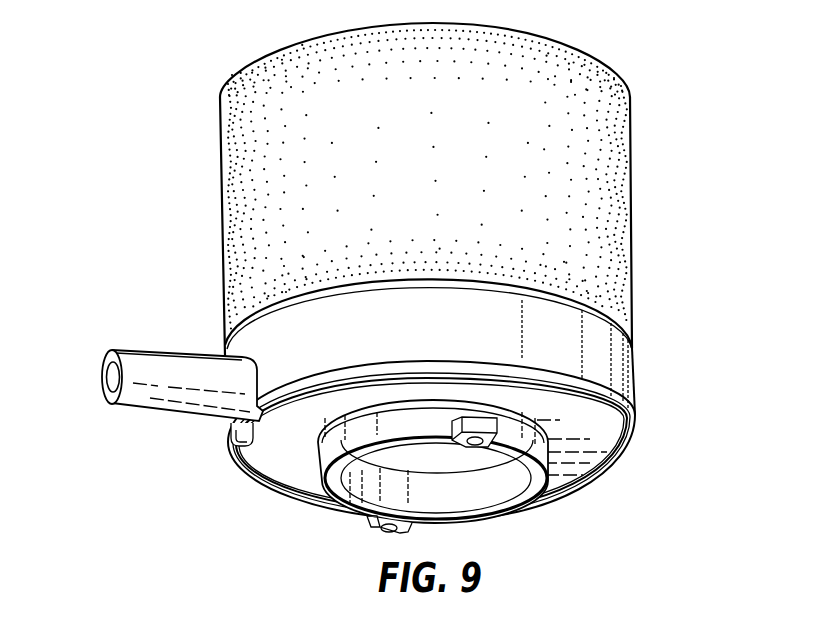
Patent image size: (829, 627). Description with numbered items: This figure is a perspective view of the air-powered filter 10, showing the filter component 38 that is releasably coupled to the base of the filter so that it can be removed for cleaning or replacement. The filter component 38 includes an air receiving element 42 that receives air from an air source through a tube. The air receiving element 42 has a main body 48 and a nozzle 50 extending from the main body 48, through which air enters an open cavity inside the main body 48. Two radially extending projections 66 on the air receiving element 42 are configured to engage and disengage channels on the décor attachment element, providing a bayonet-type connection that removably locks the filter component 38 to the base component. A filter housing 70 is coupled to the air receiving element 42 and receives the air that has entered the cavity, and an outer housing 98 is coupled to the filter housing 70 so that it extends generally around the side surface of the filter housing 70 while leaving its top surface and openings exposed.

The air-powered filter 10 is at (165, 87).
The filter component 38 is at (196, 197).
The outer housing 98 is at (614, 156).
The filter housing 70 is at (555, 317).
The main body 48 is at (288, 457).
The radially extending projections 66 is at (480, 414).
The nozzle 50 is at (183, 367).
The air receiving element 42 is at (123, 340).